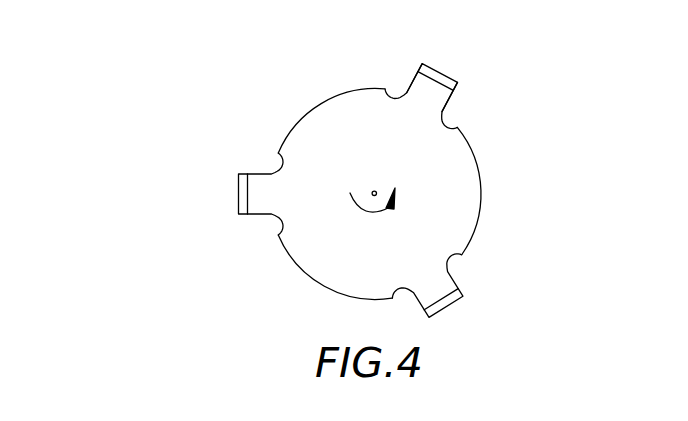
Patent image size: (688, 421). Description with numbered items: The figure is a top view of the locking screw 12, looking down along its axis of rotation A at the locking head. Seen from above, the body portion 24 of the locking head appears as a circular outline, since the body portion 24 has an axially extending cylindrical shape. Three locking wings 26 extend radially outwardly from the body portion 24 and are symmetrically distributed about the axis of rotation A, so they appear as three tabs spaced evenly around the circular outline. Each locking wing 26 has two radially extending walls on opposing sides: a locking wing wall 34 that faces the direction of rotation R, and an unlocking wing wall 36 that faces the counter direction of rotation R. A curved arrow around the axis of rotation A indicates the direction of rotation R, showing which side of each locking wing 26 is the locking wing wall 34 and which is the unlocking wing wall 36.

The locking screw 12 is at (317, 169).
The body portion 24 is at (481, 192).
The locking wings 26 is at (458, 80).
The locking wing wall 34 is at (413, 70).
The unlocking wing wall 36 is at (450, 100).
The axis of rotation A is at (373, 190).
The direction of rotation R is at (384, 204).